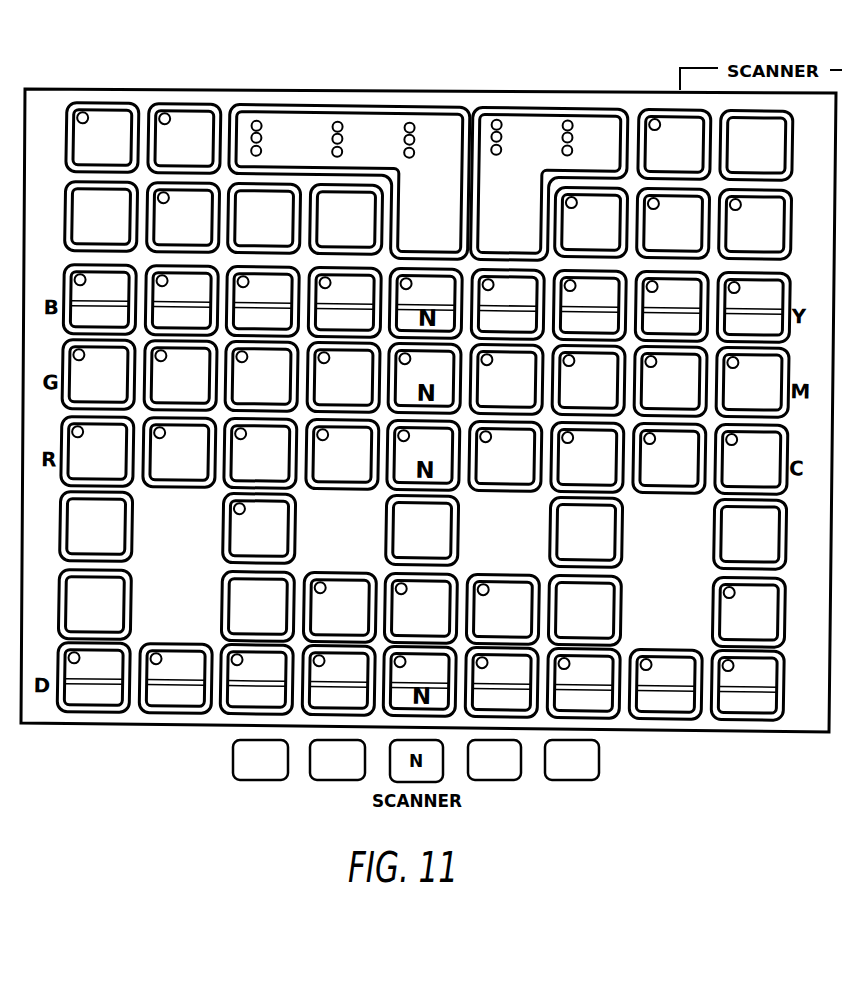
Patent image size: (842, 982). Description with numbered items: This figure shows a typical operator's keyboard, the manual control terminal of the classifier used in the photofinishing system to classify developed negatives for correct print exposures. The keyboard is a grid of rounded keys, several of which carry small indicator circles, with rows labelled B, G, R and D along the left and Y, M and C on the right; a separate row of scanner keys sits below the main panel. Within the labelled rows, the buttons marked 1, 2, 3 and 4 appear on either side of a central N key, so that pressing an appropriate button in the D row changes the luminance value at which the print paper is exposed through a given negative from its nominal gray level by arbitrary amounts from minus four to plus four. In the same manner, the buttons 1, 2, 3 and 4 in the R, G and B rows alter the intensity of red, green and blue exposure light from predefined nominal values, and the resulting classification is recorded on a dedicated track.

The key labeled 1 is at (423, 492).
The key labeled 2 is at (423, 493).
The key labeled 3 is at (423, 493).
The key labeled 4 is at (423, 493).